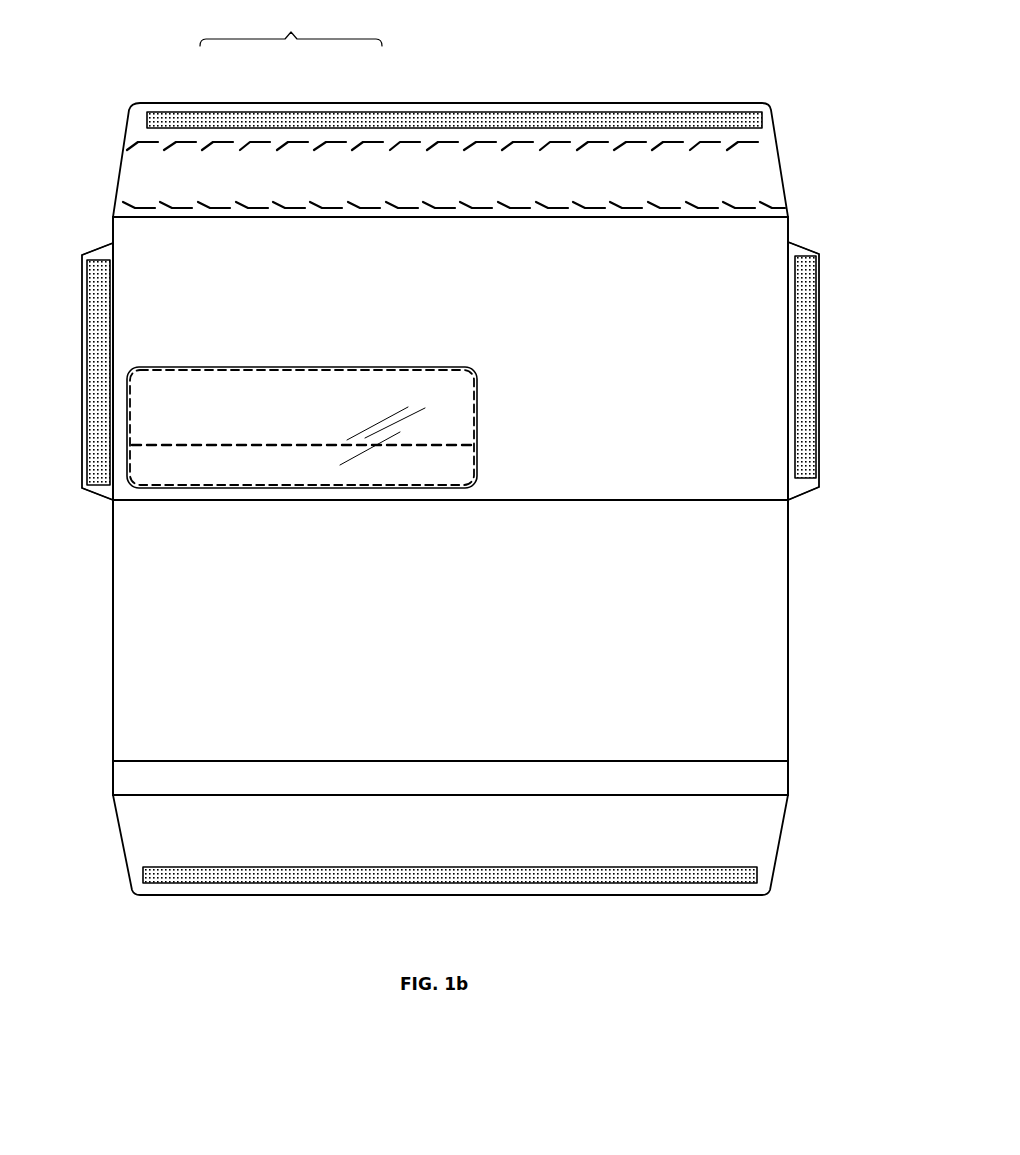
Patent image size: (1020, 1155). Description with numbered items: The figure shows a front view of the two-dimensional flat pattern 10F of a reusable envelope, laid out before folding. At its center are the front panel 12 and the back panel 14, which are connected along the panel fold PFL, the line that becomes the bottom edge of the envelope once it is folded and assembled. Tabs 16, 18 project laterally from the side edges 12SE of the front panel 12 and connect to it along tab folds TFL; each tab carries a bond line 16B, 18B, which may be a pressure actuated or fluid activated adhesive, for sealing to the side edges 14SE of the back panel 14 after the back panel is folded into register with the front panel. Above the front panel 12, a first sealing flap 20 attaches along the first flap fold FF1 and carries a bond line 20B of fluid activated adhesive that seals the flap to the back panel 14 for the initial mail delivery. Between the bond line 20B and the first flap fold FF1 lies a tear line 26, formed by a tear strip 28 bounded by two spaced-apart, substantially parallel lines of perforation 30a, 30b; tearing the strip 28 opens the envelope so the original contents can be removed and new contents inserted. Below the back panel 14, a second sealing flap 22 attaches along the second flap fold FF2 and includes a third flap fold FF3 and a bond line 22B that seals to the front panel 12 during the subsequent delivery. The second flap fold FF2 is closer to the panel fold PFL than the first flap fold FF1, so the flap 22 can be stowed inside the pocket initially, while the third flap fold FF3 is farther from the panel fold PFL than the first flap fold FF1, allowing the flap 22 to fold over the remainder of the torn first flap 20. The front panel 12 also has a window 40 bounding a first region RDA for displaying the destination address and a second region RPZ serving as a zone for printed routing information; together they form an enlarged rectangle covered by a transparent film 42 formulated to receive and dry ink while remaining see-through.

The flat pattern 10F is at (587, 52).
The first sealing flap 20 is at (447, 179).
The bond line 20B is at (412, 118).
The tear line 26 is at (291, 26).
The line of perforation 30a is at (253, 140).
The tear strip 28 is at (298, 167).
The line of perforation 30b is at (333, 207).
The first flap fold FF1 is at (410, 217).
The front panel 12 is at (634, 372).
The tab 16 is at (112, 292).
The bond line 16B is at (102, 327).
The tab 18 is at (790, 288).
The bond line 18B is at (798, 347).
The side edge 12SE is at (130, 348).
The tab fold TFL is at (113, 457).
The window 40 is at (312, 362).
The transparent film 42 is at (313, 470).
The first region RDA is at (482, 380).
The second region RPZ is at (480, 486).
The panel fold PFL is at (463, 502).
The back panel 14 is at (637, 624).
The side edge 14SE is at (150, 597).
The second flap fold FF2 is at (422, 760).
The third flap fold FF3 is at (538, 794).
The second sealing flap 22 is at (447, 836).
The bond line 22B is at (572, 868).